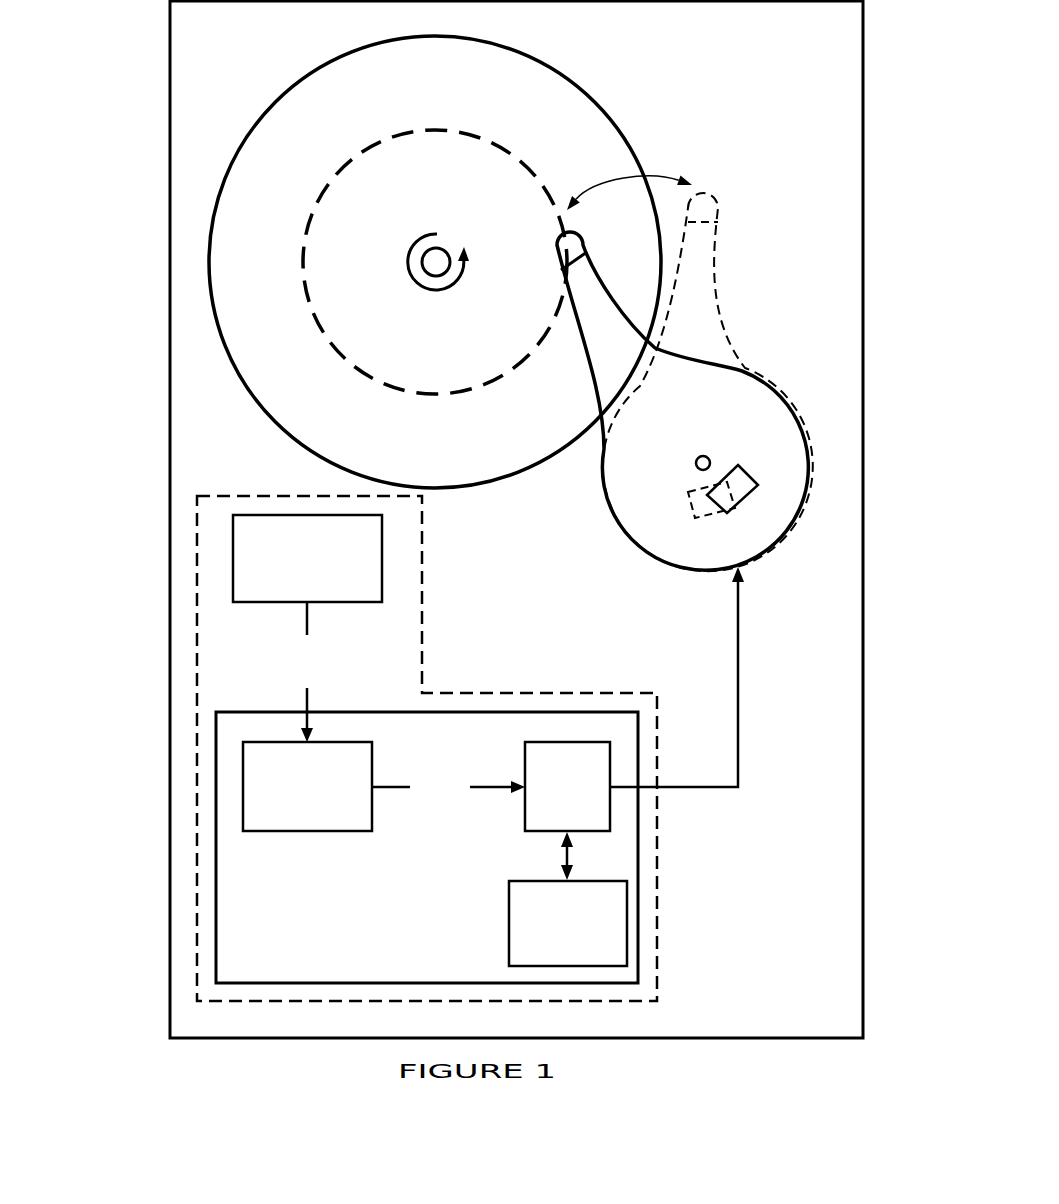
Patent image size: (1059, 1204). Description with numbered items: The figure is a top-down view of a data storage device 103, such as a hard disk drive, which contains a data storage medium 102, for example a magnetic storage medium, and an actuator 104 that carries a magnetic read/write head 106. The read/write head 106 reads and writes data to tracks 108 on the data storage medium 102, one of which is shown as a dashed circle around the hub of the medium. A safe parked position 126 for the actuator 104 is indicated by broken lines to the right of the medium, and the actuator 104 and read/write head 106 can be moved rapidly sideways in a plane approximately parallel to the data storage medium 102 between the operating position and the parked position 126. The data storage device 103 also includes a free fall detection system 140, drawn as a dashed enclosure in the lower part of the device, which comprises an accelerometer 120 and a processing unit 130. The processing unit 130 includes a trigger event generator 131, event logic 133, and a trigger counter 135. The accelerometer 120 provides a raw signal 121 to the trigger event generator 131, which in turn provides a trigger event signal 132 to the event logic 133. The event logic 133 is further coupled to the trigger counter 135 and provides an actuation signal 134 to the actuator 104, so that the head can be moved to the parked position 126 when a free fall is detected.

The data storage medium 102 is at (230, 388).
The data storage device 103 is at (753, 1026).
The actuator 104 is at (578, 365).
The read/write head 106 is at (600, 243).
The tracks 108 is at (313, 185).
The accelerometer 120 is at (291, 582).
The raw signal 121 is at (307, 672).
The parked position 126 is at (737, 205).
The processing unit 130 is at (312, 961).
The trigger event generator 131 is at (291, 821).
The trigger event signal 132 is at (423, 821).
The event logic 133 is at (551, 821).
The actuation signal 134 is at (708, 677).
The trigger counter 135 is at (552, 956).
The free fall detection system 140 is at (184, 681).